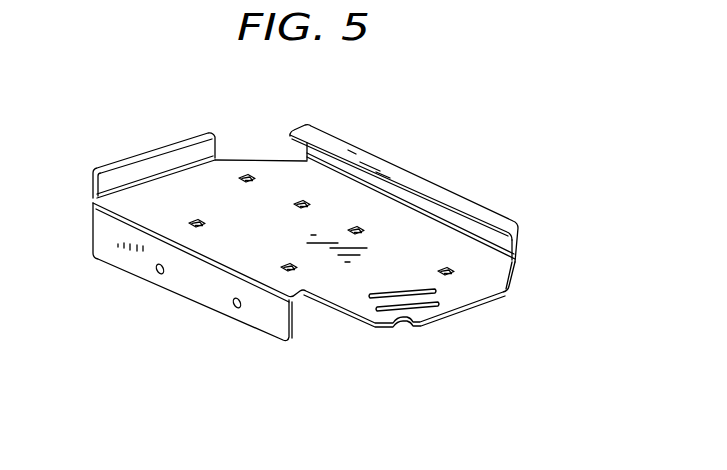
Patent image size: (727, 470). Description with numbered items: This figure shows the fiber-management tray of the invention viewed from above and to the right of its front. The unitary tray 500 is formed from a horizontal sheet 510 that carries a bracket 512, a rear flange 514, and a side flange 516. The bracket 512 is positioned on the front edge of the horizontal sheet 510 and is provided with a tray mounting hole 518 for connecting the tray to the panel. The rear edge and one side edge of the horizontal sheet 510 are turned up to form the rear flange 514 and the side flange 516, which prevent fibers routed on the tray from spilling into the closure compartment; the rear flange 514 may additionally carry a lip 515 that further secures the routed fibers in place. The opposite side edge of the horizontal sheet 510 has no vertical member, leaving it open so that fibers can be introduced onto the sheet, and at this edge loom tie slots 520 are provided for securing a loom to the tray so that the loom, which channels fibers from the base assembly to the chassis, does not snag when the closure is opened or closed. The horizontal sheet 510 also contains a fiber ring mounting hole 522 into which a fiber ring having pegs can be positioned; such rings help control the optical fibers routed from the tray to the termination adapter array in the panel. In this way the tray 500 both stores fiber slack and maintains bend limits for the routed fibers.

The unitary tray 500 is at (504, 126).
The horizontal sheet 510 is at (495, 270).
The bracket 512 is at (110, 240).
The rear flange 514 is at (390, 163).
The lip 515 is at (480, 205).
The side flange 516 is at (120, 162).
The tray mounting hole 518 is at (234, 305).
The loom tie slots 520 is at (426, 313).
The fiber ring mounting hole 522 is at (198, 218).